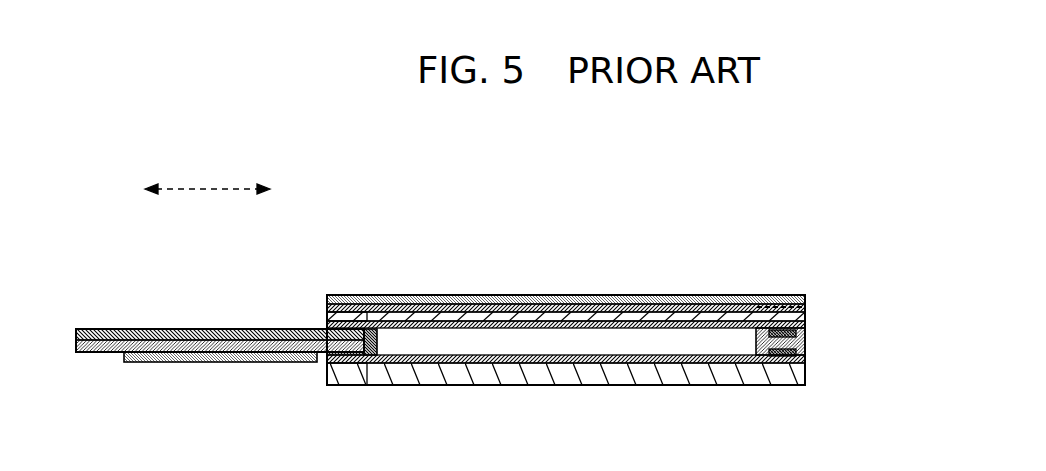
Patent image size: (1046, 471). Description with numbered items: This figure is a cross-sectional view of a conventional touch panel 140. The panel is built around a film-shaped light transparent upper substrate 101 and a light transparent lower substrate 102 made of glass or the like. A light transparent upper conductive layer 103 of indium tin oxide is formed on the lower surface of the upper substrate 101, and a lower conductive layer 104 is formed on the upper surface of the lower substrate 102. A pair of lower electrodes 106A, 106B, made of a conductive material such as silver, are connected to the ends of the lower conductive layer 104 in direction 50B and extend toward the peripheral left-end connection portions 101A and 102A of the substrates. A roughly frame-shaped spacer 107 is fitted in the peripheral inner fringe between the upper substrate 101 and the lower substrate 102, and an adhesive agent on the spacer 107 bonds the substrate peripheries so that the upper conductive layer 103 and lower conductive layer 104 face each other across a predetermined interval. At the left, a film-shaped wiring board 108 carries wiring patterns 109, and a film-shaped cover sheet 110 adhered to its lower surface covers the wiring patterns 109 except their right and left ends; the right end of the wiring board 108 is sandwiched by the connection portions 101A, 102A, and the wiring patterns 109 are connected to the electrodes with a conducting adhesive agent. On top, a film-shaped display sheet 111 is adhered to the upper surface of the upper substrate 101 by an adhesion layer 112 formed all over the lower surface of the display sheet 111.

The moving direction of the flexible printed circuit board 50B is at (197, 190).
The conventional touch panel 140 is at (795, 230).
The upper substrate 101 is at (703, 323).
The connection portion of upper substrate 101A is at (347, 320).
The lower substrate 102 is at (682, 378).
The connection portion of lower substrate 102A is at (348, 377).
The upper conductive layer 103 is at (627, 327).
The lower conductive layer 104 is at (428, 360).
The lower electrode 106A is at (366, 356).
The lower electrode 106B is at (790, 357).
The spacer 107 is at (805, 328).
The wiring board 108 is at (193, 340).
The wiring patterns 109 is at (138, 338).
The cover sheet 110 is at (188, 358).
The display sheet 111 is at (578, 302).
The adhesion layer 112 is at (473, 305).